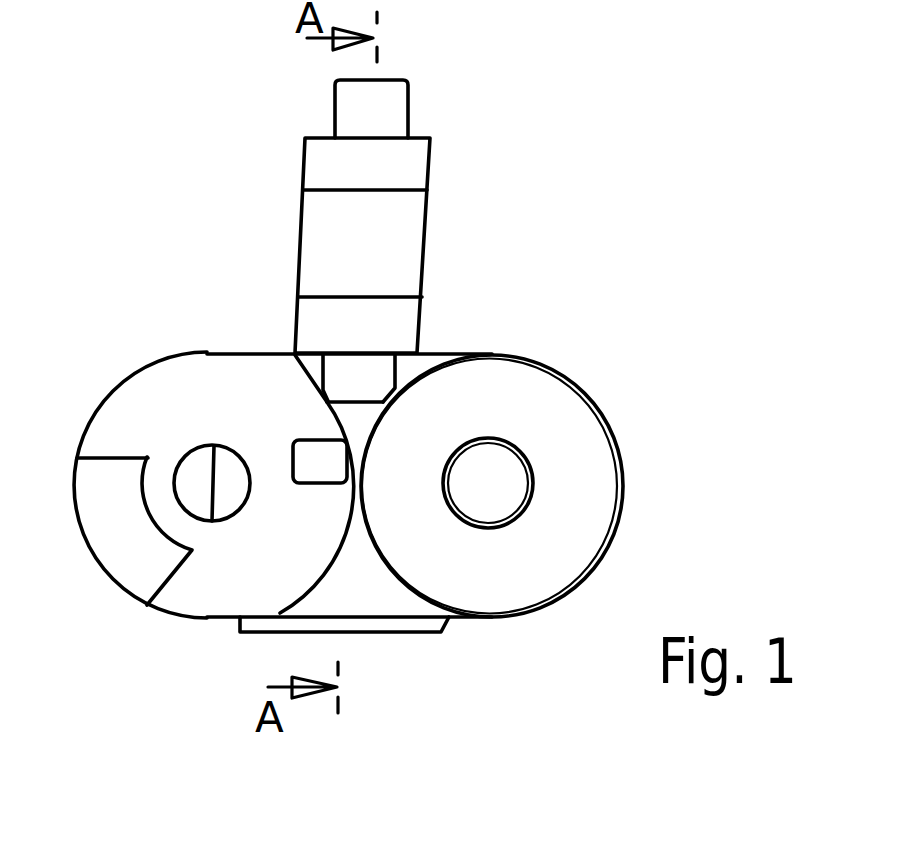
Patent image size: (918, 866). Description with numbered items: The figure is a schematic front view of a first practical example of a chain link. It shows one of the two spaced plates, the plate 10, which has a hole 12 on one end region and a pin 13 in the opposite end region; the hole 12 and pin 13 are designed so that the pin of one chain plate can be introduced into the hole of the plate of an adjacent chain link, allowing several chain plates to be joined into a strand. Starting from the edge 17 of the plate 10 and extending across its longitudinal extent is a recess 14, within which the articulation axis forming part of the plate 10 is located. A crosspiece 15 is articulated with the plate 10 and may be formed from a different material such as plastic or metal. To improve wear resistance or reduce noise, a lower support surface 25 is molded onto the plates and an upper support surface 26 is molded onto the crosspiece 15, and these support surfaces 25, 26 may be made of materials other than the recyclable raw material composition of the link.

The plate 10 is at (597, 435).
The hole 12 is at (508, 493).
The pin 13 is at (198, 491).
The recess 14 is at (408, 374).
The crosspiece 15 is at (402, 228).
The edge 17 is at (237, 353).
The lower support surface 25 is at (436, 630).
The upper support surface 26 is at (405, 167).